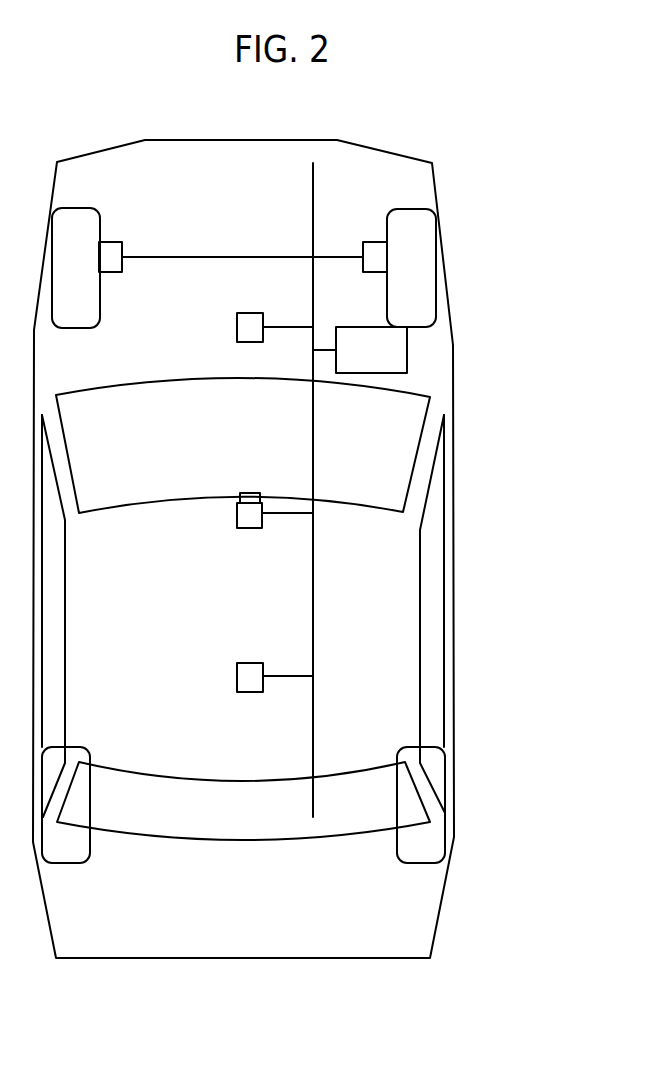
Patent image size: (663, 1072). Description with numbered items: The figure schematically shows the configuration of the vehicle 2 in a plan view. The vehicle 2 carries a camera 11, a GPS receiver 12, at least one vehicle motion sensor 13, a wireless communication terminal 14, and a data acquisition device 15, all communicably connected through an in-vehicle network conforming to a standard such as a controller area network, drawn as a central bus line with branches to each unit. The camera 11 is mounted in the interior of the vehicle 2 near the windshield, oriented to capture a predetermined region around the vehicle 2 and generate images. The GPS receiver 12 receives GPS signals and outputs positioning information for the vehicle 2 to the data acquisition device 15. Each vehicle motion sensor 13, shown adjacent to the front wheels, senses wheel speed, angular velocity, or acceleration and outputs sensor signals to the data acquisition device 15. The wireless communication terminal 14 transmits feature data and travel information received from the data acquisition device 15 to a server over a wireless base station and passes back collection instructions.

The vehicle 2 is at (455, 817).
The camera 11 is at (237, 519).
The GPS receiver 12 is at (237, 672).
The vehicle motion sensor 13 is at (117, 240).
The wireless communication terminal 14 is at (237, 328).
The data acquisition device 15 is at (407, 350).